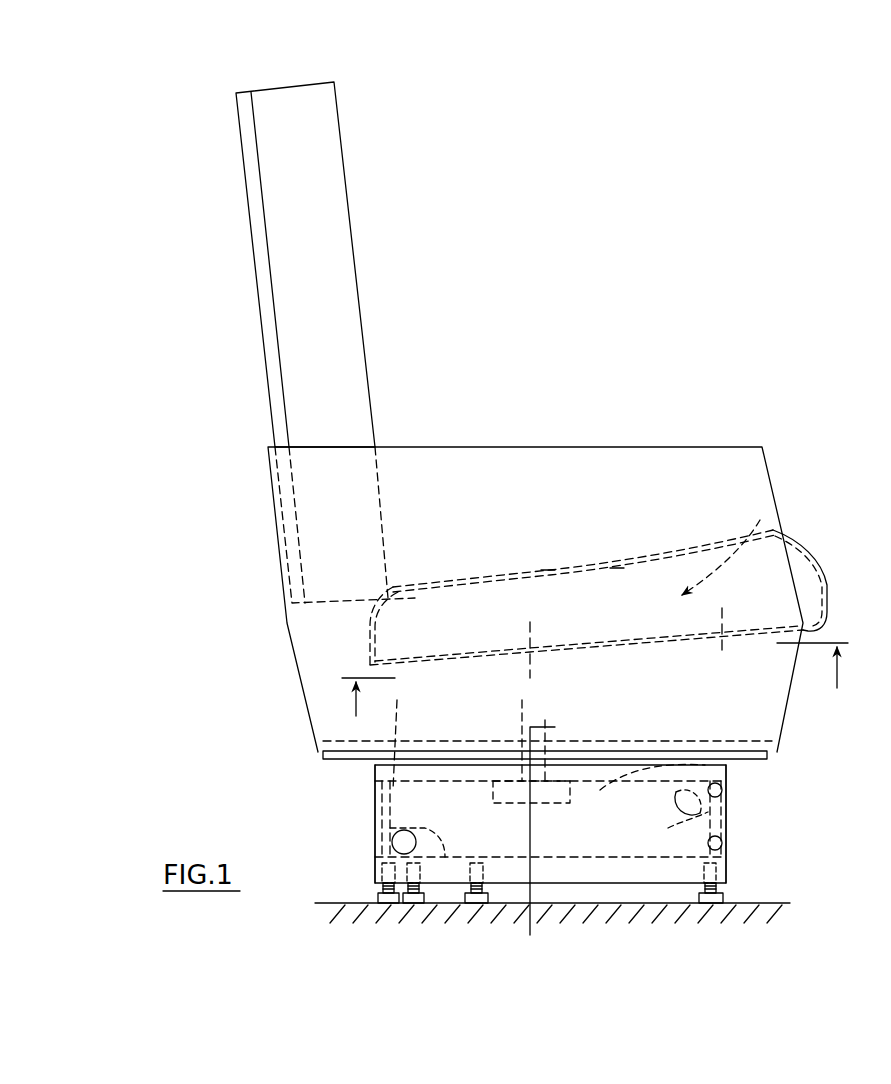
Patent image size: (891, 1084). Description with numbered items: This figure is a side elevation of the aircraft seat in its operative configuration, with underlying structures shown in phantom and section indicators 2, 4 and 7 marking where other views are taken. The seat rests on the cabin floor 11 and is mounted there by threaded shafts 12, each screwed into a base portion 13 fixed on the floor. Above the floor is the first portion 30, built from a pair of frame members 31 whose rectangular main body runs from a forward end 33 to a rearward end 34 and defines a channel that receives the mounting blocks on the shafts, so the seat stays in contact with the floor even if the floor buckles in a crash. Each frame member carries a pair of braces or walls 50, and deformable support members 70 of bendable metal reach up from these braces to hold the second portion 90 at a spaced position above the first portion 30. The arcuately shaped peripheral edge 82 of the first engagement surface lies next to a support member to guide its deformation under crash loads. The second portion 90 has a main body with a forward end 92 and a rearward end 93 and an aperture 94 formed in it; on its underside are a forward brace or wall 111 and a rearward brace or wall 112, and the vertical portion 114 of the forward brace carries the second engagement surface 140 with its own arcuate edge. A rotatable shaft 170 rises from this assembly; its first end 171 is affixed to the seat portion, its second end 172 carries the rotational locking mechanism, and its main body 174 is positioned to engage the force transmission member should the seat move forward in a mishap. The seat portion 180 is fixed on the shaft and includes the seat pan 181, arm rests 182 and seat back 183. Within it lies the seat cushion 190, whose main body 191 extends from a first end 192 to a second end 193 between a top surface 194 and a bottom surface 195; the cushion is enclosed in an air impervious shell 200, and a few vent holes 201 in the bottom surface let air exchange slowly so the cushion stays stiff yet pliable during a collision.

The section line 2 is at (368, 711).
The section line 4- 4 is at (560, 732).
The section line 7 is at (812, 679).
The cabin floor 11 is at (330, 903).
The threaded shaft 12 is at (375, 886).
The base portion 13 is at (723, 900).
The first portion 30 is at (577, 855).
The frame member 31 is at (527, 861).
The forward end 33 is at (728, 867).
The rearward end 34 is at (375, 865).
The braces or walls 50 is at (412, 800).
The deformable support members 70 is at (725, 808).
The arcuately shaped peripheral edge 82 is at (436, 830).
The second portion 90 is at (363, 786).
The forward end 92 is at (729, 768).
The rearward end 93 is at (370, 769).
The aperture 94 is at (606, 780).
The forward brace or wall 111 is at (664, 797).
The rearward brace or wall 112 is at (413, 737).
The vertical portion 114 is at (708, 812).
The second engagement surface 140 is at (701, 765).
The rotatable shaft 170 is at (518, 761).
The first end 171 is at (546, 765).
The second end 172 is at (618, 748).
The main body 174 is at (530, 715).
The seat portion 180 is at (464, 416).
The seat pan 181 is at (778, 740).
The arm rests 182 is at (640, 468).
The seat back 183 is at (335, 284).
The seat cushion 190 is at (764, 517).
The main body 191 is at (598, 600).
The first end 192 is at (388, 637).
The second end 193 is at (832, 596).
The top surface 194 is at (548, 570).
The bottom surface 195 is at (440, 661).
The air impervious shell 200 is at (805, 550).
The vent holes 201 is at (540, 637).